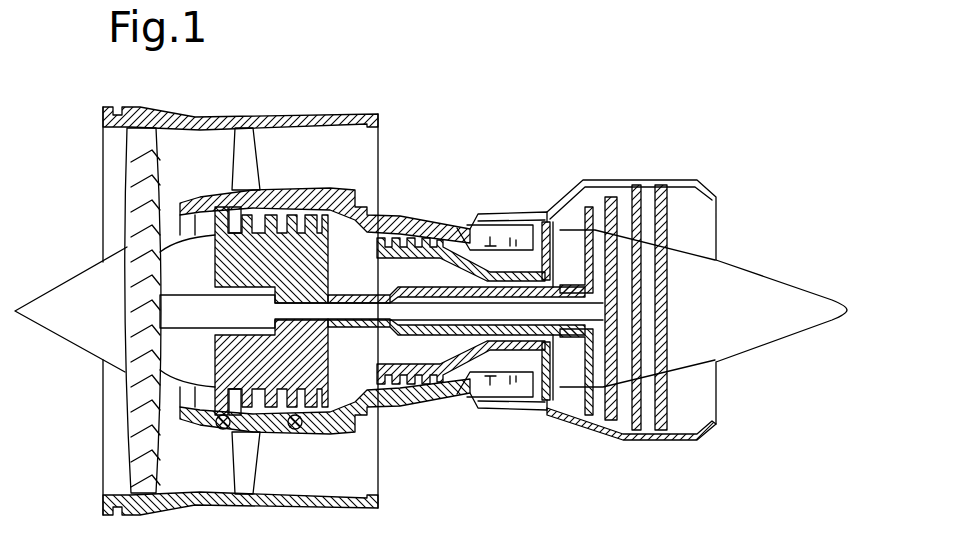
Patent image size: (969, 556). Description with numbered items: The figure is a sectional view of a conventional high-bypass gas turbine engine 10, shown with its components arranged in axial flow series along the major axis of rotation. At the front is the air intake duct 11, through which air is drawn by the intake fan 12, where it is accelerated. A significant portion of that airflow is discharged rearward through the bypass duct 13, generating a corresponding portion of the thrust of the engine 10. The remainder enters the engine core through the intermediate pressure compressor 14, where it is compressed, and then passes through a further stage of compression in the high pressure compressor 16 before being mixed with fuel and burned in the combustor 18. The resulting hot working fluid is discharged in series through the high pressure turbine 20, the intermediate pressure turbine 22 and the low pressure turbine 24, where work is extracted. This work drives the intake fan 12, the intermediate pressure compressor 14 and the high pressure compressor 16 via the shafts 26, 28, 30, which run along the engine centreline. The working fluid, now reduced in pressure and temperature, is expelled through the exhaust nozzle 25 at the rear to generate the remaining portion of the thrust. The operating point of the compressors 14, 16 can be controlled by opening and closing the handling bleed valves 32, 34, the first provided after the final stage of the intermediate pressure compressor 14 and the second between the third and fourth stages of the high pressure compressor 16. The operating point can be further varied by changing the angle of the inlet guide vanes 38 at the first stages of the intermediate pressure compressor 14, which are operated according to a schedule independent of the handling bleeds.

The high-bypass gas turbine engine 10 is at (467, 150).
The air intake duct 11 is at (113, 137).
The intake fan 12 is at (143, 227).
The bypass duct 13 is at (367, 174).
The intermediate pressure compressor 14 is at (210, 203).
The high pressure compressor 16 is at (420, 255).
The combustor 18 is at (507, 233).
The high pressure turbine 20 is at (547, 222).
The intermediate pressure turbine 22 is at (585, 207).
The low pressure turbine 24 is at (660, 190).
The exhaust nozzle 25 is at (706, 228).
The shaft 26 is at (183, 317).
The shaft 28 is at (448, 338).
The shaft 30 is at (507, 350).
The handling bleed valve 32 is at (222, 430).
The handling bleed valve 34 is at (296, 432).
The inlet guide vanes 38 is at (238, 214).